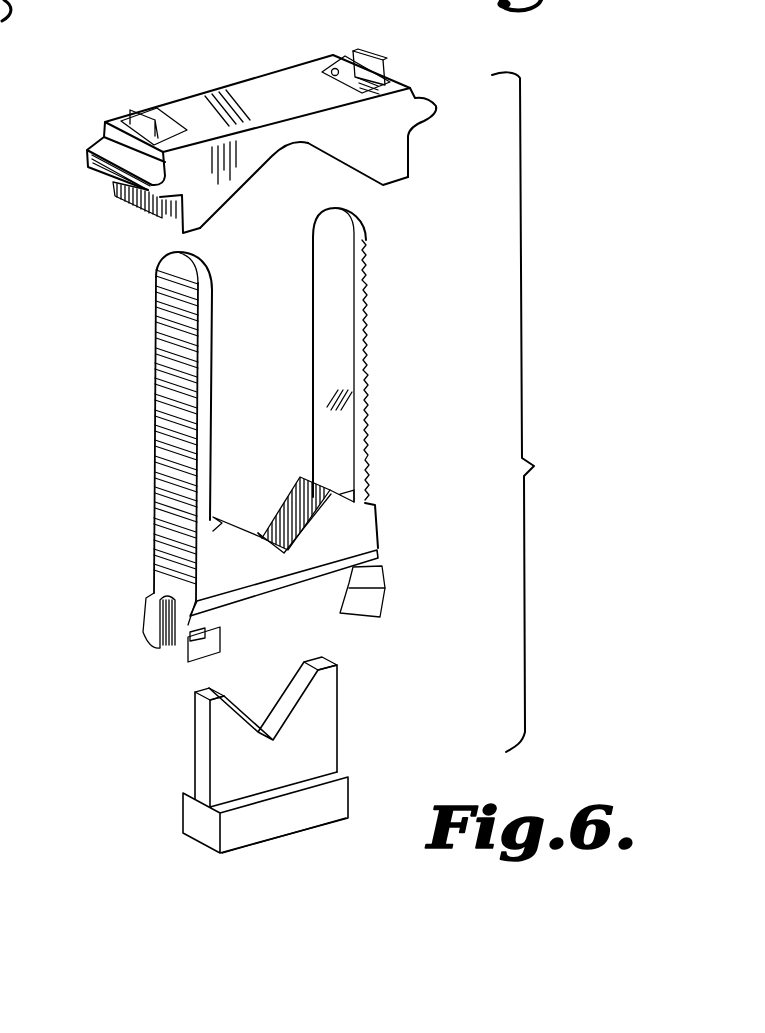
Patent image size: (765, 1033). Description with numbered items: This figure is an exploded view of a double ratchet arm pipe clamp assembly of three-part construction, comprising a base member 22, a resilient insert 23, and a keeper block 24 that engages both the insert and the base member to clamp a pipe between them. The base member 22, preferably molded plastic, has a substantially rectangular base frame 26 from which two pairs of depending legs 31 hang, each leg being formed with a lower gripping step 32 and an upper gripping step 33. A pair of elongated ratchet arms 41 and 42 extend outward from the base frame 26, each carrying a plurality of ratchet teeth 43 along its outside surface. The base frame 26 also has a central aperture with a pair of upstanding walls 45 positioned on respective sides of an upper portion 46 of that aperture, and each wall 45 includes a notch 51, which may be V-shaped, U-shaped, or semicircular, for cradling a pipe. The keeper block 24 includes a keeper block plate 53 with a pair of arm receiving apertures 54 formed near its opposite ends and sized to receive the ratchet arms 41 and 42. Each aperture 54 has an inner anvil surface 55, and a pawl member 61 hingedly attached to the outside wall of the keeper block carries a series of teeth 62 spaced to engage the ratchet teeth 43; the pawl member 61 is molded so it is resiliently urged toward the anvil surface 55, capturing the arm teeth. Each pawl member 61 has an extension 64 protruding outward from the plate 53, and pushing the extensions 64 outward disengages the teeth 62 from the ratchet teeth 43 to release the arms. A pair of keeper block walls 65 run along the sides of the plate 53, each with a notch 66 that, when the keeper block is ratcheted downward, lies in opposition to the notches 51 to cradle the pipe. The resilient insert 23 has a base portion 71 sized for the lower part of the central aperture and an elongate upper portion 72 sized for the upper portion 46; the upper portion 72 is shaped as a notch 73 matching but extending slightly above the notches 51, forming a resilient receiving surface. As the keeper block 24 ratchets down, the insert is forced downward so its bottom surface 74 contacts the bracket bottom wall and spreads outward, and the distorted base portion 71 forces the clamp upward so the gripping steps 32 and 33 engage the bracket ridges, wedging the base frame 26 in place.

The base member 22 is at (396, 503).
The resilient insert 23 is at (352, 712).
The keeper block 24 is at (206, 70).
The base frame 26 is at (380, 553).
The depending legs 31 is at (150, 657).
The lower gripping step 32 is at (183, 635).
The upper gripping step 33 is at (358, 560).
The ratchet arm 41 is at (209, 325).
The ratchet arm 42 is at (327, 270).
The ratchet teeth 43 is at (156, 335).
The upstanding walls 45 is at (300, 478).
The upper portion of central aperture 46 is at (283, 527).
The notch 51 is at (268, 548).
The keeper block plate 53 is at (267, 90).
The arm receiving apertures 54 is at (334, 68).
The anvil surface 55 is at (160, 118).
The pawl member 61 is at (392, 74).
The pawl teeth 62 is at (360, 52).
The extension 64 is at (133, 123).
The keeper block walls 65 is at (353, 152).
The notch 66 is at (300, 143).
The base portion 71 is at (195, 823).
The upper portion 72 is at (333, 673).
The notch 73 is at (262, 722).
The bottom surface 74 is at (258, 840).